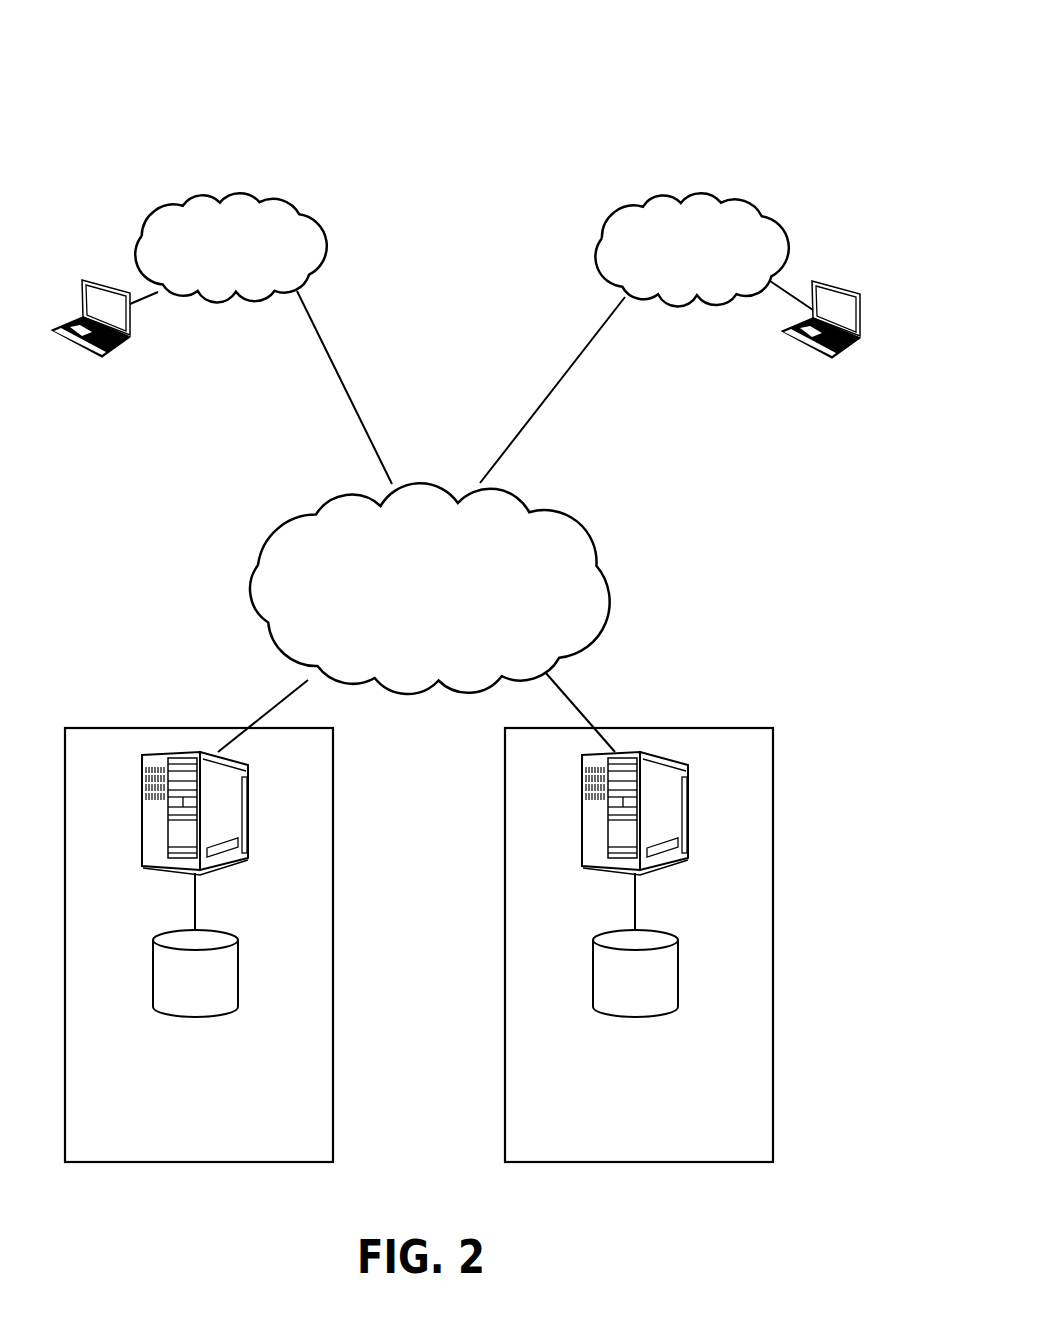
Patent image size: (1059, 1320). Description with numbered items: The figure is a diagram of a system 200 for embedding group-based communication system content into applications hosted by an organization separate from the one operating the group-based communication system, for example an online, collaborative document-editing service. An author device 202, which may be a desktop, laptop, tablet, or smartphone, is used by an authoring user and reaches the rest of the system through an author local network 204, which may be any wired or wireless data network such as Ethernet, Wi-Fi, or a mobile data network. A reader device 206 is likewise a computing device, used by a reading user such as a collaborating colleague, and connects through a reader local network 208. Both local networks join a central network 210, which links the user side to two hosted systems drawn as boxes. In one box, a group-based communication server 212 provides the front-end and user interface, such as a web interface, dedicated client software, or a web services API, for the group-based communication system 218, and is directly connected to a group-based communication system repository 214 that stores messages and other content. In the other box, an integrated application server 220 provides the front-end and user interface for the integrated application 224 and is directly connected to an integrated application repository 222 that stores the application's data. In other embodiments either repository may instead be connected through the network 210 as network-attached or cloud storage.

The system 200 is at (762, 55).
The author device 202 is at (100, 283).
The author local network 204 is at (288, 193).
The reader device 206 is at (825, 283).
The reader local network 208 is at (753, 195).
The network 210 is at (548, 490).
The group-based communication server 212 is at (582, 807).
The group-based communication system repository 214 is at (593, 968).
The group-based communication system 218 is at (639, 945).
The integrated application server 220 is at (142, 825).
The integrated application repository 222 is at (153, 968).
The integrated application 224 is at (199, 945).